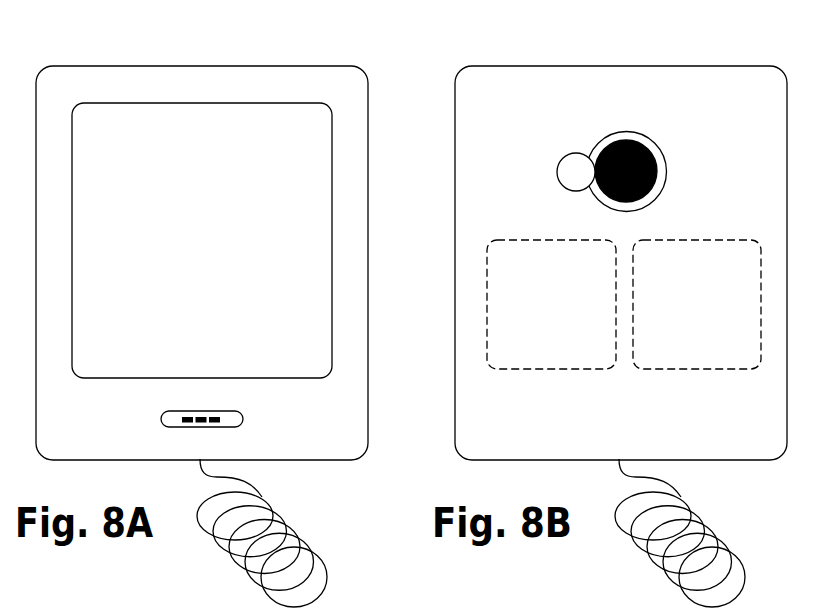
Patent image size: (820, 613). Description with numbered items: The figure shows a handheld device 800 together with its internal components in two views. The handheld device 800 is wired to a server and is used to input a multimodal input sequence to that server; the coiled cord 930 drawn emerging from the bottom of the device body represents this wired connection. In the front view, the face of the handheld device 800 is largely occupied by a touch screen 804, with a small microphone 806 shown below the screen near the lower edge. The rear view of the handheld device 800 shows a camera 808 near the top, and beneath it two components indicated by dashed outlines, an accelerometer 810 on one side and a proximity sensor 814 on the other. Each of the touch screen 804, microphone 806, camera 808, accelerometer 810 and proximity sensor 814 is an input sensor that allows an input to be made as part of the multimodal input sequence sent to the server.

In FIG. 8A, the handheld device 800 is at (195, 238).
In FIG. 8B, the handheld device 800 is at (621, 238).
In FIG. 8A, the touch screen 804 is at (250, 204).
In FIG. 8A, the microphone 806 is at (271, 459).
In FIG. 8B, the camera 808 is at (664, 141).
In FIG. 8B, the accelerometer 810 is at (499, 339).
In FIG. 8B, the proximity sensor 814 is at (664, 339).
In FIG. 8A, the coiled cord 930 is at (163, 536).
In FIG. 8B, the coiled cord 930 is at (606, 536).